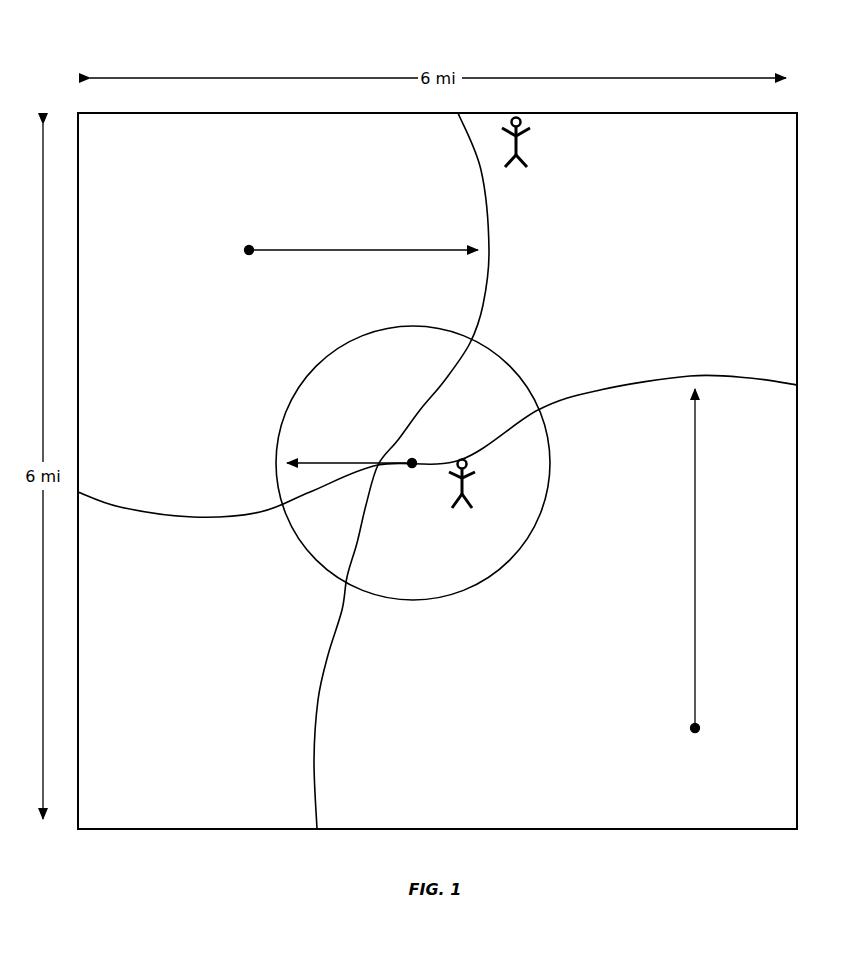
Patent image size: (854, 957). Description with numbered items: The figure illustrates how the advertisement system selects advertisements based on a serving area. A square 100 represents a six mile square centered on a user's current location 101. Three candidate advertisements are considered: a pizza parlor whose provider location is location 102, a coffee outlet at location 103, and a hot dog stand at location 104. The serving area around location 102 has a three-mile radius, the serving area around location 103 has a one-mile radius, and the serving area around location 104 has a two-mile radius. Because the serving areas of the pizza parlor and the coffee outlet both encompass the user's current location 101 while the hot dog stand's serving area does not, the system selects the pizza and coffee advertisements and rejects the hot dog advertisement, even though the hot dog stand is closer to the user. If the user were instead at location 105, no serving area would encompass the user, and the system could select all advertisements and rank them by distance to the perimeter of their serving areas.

The square 100 is at (758, 34).
The user's current location 101 is at (467, 480).
The pizza parlor location 102 is at (690, 757).
The coffee outlet location 103 is at (395, 492).
The hot dog stand location 104 is at (350, 250).
The alternative user location 105 is at (522, 140).